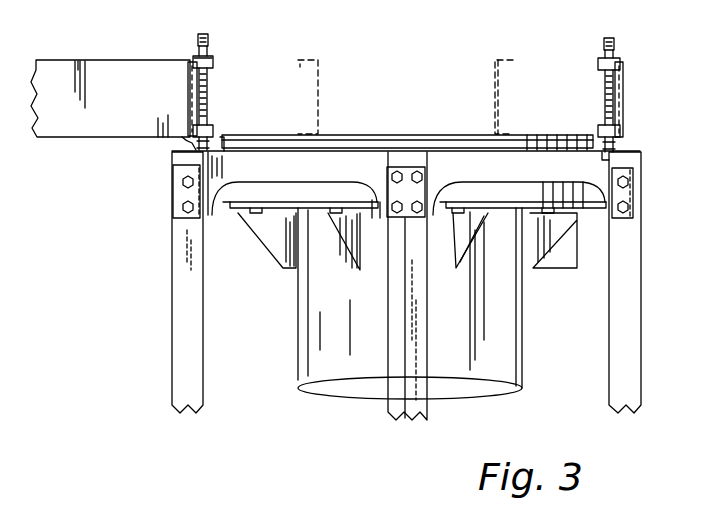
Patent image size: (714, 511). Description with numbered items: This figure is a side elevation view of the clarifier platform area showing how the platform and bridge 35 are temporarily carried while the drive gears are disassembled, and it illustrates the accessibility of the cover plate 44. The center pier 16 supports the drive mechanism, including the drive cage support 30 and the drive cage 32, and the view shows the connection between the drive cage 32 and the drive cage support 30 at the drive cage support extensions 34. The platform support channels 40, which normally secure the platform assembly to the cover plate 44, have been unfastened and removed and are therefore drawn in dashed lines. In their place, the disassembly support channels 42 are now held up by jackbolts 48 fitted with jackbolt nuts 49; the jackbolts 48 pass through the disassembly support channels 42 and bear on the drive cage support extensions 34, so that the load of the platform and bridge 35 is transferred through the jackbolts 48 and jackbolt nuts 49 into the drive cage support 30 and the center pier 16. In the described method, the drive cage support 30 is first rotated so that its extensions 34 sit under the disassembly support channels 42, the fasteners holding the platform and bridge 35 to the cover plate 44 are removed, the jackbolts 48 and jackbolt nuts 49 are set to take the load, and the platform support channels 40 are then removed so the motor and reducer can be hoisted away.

The center pier 16 is at (523, 332).
The drive cage support 30 is at (282, 183).
The drive cage 32 is at (204, 345).
The drive cage support extensions 34 is at (182, 143).
The bridge 35 is at (106, 60).
The platform support channels 40 is at (322, 62).
The disassembly support channels 42 is at (190, 94).
The cover plate 44 is at (405, 135).
The jackbolts 48 is at (200, 34).
The jackbolt nuts 49 is at (195, 53).